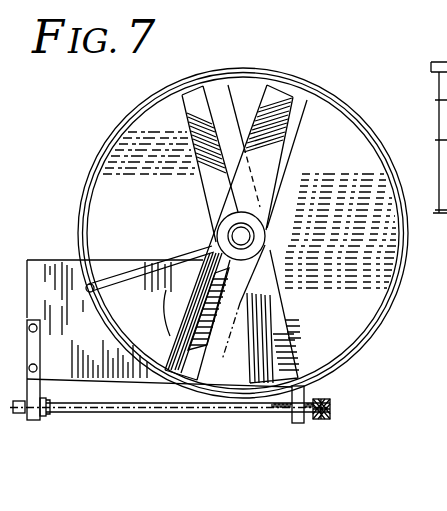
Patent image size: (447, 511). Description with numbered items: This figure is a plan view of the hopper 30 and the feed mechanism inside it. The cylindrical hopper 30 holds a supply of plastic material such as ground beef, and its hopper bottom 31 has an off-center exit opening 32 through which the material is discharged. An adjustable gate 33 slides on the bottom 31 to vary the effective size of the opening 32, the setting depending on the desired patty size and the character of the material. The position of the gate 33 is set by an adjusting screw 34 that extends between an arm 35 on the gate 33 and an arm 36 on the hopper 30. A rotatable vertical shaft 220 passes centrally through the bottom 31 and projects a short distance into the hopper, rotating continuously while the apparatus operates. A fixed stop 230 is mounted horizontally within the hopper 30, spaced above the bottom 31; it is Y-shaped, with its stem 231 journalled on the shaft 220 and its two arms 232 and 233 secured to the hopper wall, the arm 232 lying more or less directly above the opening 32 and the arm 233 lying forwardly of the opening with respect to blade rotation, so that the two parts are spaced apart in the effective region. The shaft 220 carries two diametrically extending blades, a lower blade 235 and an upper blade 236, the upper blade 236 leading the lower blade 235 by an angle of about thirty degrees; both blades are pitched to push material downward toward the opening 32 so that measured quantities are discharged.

The hopper 30 is at (107, 135).
The hopper bottom 31 is at (152, 166).
The exit opening 32 is at (233, 372).
The adjustable gate 33 is at (42, 260).
The adjusting screw 34 is at (95, 413).
The arm 35 is at (35, 420).
The arm 36 is at (290, 391).
The vertical shaft 220 is at (243, 236).
The fixed stop 230 is at (132, 213).
The stem 231 is at (196, 242).
The arm 232 is at (200, 305).
The arm 233 is at (127, 268).
The lower blade 235 is at (283, 328).
The upper blade 236 is at (178, 322).